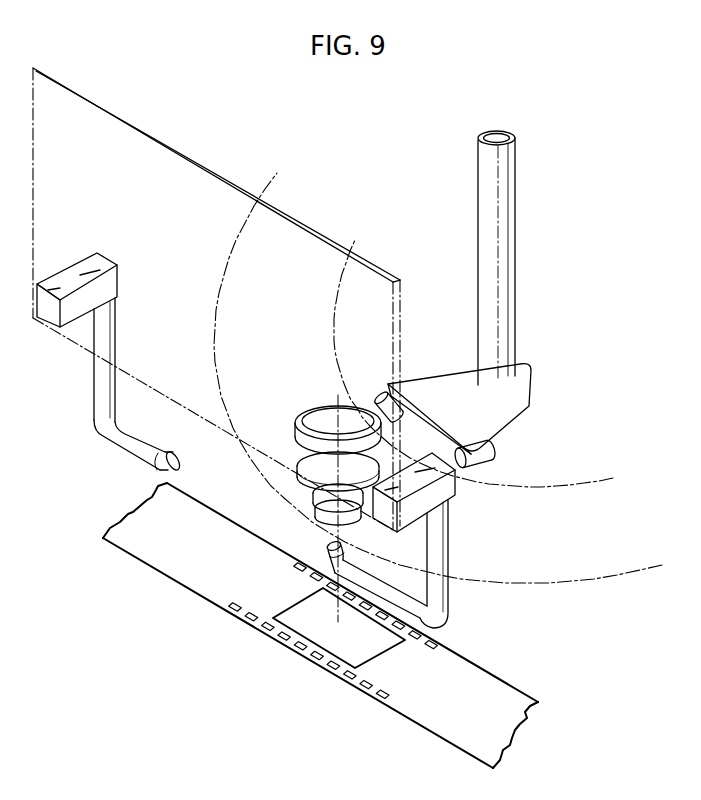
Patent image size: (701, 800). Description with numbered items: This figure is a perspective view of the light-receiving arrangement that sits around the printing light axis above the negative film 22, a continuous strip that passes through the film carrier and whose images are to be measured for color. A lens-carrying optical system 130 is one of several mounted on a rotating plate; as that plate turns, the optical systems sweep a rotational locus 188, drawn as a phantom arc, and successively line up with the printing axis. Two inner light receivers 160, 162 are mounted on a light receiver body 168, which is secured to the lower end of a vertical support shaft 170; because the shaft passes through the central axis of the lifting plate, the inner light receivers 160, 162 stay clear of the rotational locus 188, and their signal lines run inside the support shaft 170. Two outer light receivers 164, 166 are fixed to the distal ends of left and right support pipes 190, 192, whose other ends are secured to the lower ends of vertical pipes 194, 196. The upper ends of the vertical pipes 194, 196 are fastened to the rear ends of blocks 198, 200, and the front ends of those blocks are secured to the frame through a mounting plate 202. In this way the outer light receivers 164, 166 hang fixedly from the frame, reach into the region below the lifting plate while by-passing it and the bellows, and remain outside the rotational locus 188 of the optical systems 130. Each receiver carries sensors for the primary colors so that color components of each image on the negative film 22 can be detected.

The negative film 22 is at (318, 665).
The optical systems 130 is at (296, 438).
The inner light receiver 160 is at (378, 396).
The inner light receiver 162 is at (478, 466).
The outer light receiver 164 is at (182, 456).
The outer light receiver 166 is at (327, 548).
The light receiver body 168 is at (531, 415).
The support shaft 170 is at (513, 265).
The rotational locus 188 is at (560, 585).
The support pipe 190 is at (108, 440).
The support pipe 192 is at (393, 590).
The vertical pipe 194 is at (94, 390).
The vertical pipe 196 is at (449, 602).
The block 198 is at (117, 272).
The block 200 is at (422, 518).
The mounting plate 202 is at (313, 232).